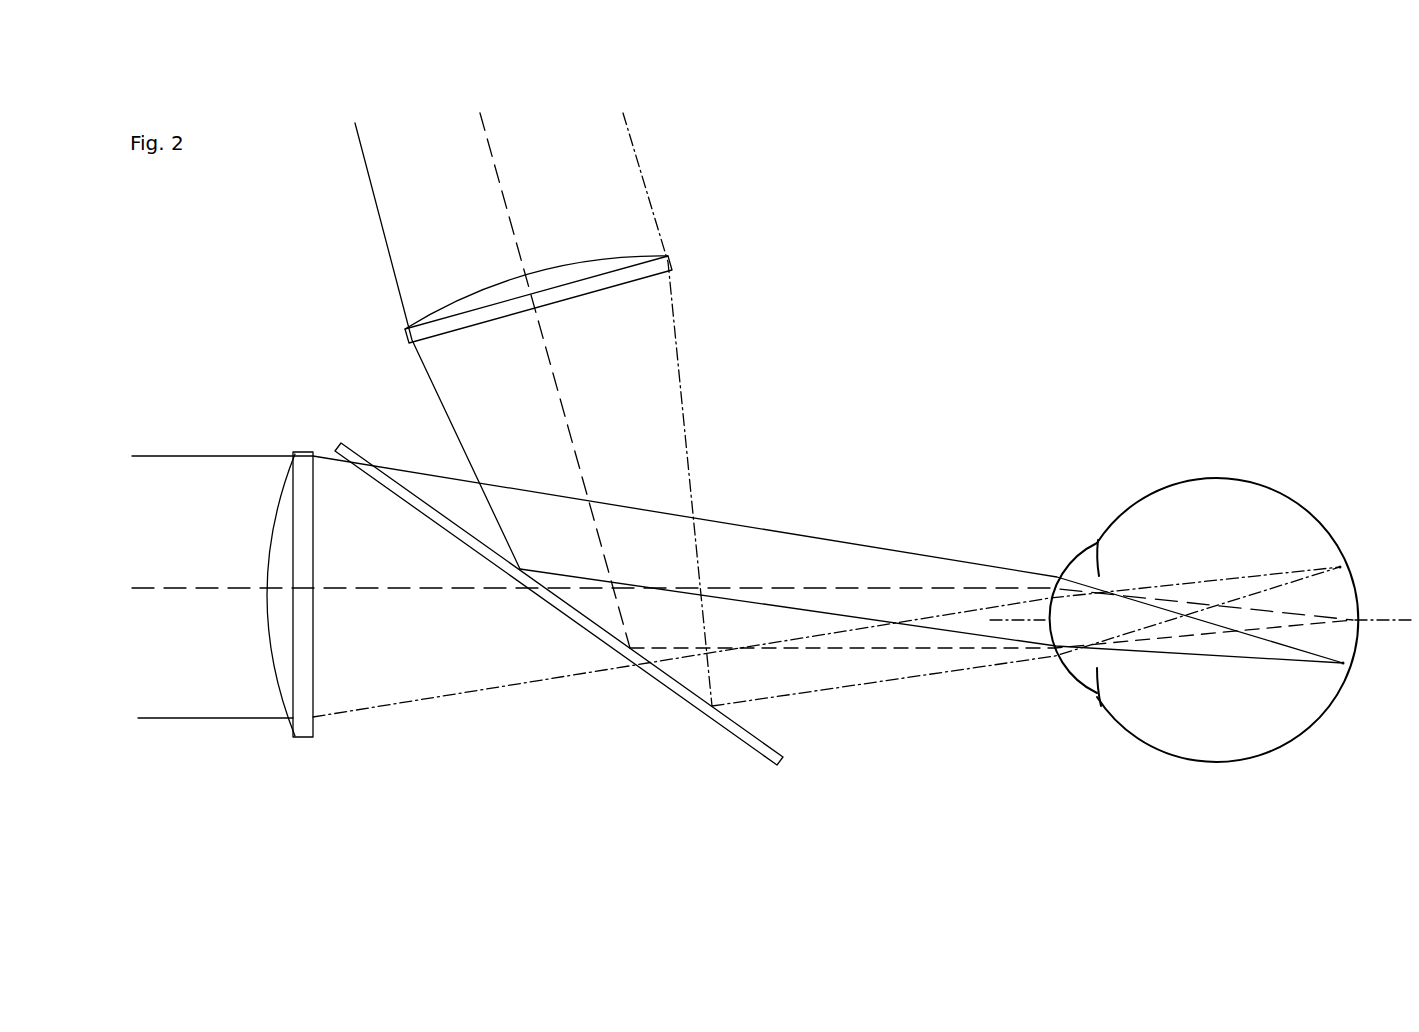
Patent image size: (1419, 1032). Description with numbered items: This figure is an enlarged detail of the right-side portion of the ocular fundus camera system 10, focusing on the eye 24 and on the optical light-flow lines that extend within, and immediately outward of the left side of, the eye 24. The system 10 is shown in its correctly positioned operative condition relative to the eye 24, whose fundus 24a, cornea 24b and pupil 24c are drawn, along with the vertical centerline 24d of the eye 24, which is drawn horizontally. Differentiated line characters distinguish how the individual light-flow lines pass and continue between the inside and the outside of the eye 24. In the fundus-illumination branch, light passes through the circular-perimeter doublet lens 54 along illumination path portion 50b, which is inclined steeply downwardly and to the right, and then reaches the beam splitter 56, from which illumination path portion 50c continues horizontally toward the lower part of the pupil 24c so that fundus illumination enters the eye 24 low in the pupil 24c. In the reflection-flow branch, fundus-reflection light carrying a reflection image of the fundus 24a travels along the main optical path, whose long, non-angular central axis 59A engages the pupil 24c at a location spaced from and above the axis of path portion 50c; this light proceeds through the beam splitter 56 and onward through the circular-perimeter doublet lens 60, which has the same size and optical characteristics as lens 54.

The ocular fundus camera system 10 is at (712, 120).
The eye 24 is at (1222, 479).
The fundus 24a is at (1342, 592).
The cornea 24b is at (1066, 675).
The pupil 24c is at (1099, 577).
The vertical centerline of eye 24d is at (1375, 628).
The illumination path portion 50b is at (580, 175).
The illumination path portion 50c is at (845, 655).
The doublet lens 54 is at (601, 266).
The beam splitter 56 is at (668, 672).
The central axis of main optical path 59A is at (196, 582).
The doublet lens 60 is at (283, 510).